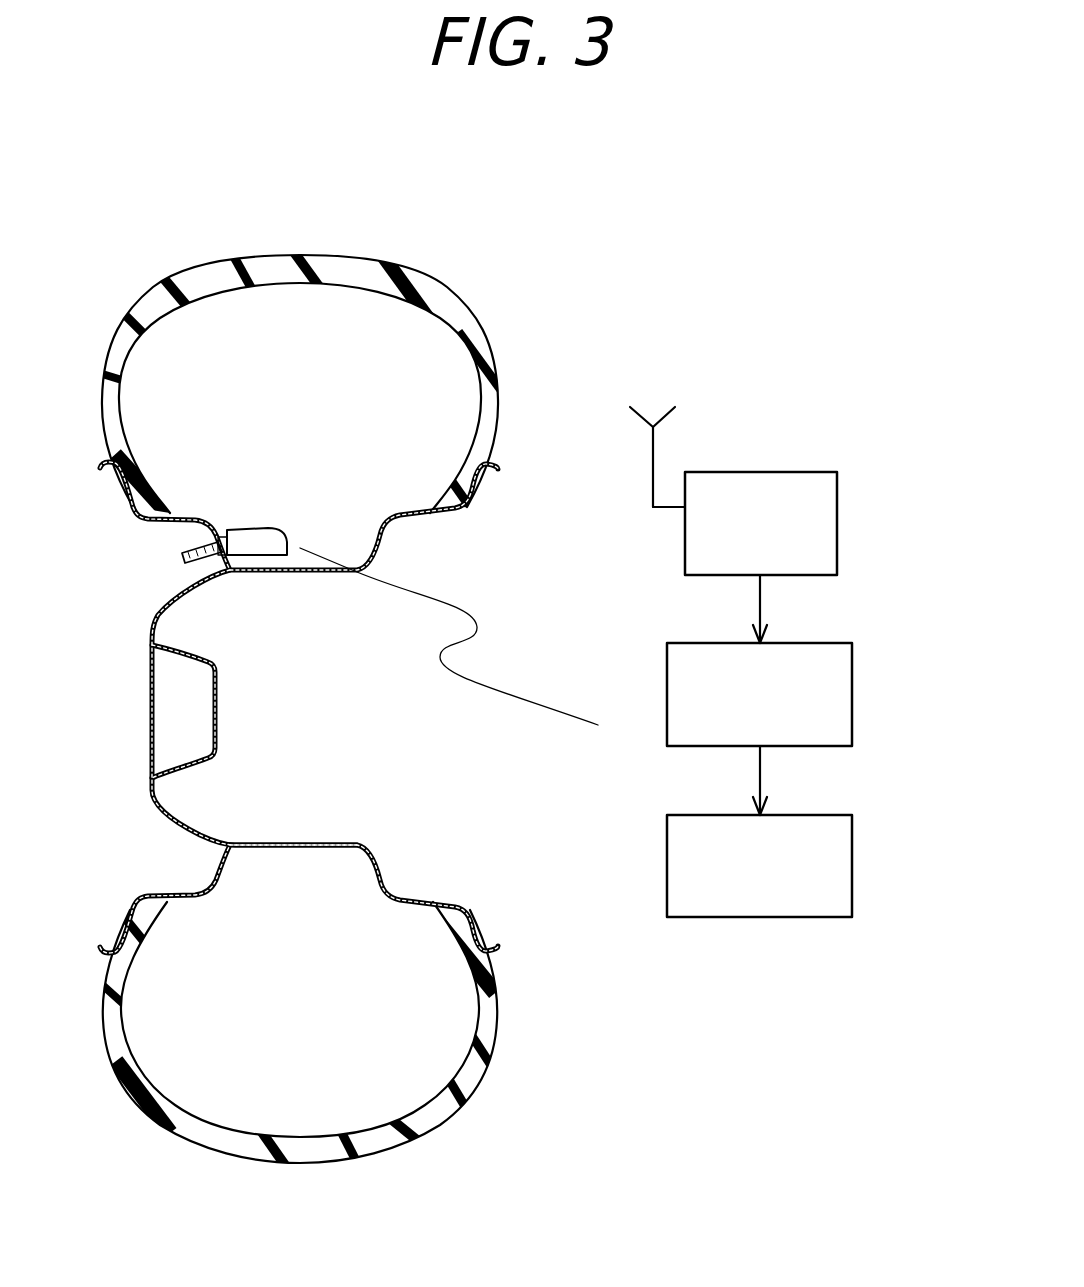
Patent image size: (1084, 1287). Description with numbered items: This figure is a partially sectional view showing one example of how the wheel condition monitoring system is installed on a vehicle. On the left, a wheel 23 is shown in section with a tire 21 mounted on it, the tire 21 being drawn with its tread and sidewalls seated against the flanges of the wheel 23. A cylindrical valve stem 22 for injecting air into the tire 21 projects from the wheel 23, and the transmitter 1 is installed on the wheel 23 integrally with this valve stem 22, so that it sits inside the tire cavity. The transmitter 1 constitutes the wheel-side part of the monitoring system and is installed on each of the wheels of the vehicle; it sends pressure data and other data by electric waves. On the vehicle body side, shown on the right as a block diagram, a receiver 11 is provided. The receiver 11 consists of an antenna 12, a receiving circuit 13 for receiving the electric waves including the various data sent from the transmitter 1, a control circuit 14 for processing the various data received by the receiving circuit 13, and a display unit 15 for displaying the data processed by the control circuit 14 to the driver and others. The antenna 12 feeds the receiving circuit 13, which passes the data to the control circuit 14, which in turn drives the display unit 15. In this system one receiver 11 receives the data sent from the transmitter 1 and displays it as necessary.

The transmitter 1 is at (263, 527).
The tire 21 is at (415, 275).
The cylindrical valve stem 22 is at (168, 563).
The wheel 23 is at (298, 575).
The receiver 11 is at (792, 621).
The antenna 12 is at (653, 458).
The receiving circuit 13 is at (837, 515).
The control circuit 14 is at (852, 690).
The display unit 15 is at (852, 846).